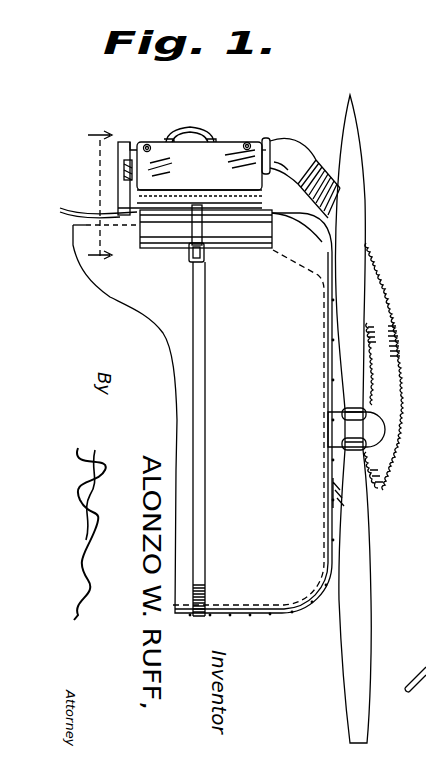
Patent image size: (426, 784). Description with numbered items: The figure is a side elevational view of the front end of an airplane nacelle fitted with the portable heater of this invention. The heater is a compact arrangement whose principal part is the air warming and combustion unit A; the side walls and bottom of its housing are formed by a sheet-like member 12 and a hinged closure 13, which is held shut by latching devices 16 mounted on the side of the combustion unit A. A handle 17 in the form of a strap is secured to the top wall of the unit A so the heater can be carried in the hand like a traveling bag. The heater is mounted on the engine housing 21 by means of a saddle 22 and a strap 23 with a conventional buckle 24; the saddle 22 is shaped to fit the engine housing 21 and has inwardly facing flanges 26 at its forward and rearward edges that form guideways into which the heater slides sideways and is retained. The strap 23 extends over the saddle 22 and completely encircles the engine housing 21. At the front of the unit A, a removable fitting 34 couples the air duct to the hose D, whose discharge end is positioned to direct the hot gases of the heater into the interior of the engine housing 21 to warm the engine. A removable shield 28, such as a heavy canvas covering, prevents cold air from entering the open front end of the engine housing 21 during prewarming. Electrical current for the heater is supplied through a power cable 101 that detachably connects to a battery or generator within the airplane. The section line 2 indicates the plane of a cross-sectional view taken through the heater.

The section line 2- 2 is at (100, 197).
The sheet-like member 12 is at (199, 217).
The closure 13 is at (203, 164).
The latching devices 16 is at (252, 143).
The handle 17 is at (194, 131).
The engine housing 21 is at (203, 414).
The saddle 22 is at (233, 249).
The strap 23 is at (206, 312).
The buckle 24 is at (189, 259).
The saddle flanges 26 is at (286, 218).
The removable shield 28 is at (337, 529).
The fitting 34 is at (296, 142).
The power cable 101 is at (82, 212).
The air warming and combustion unit A is at (245, 141).
The hose D is at (387, 293).